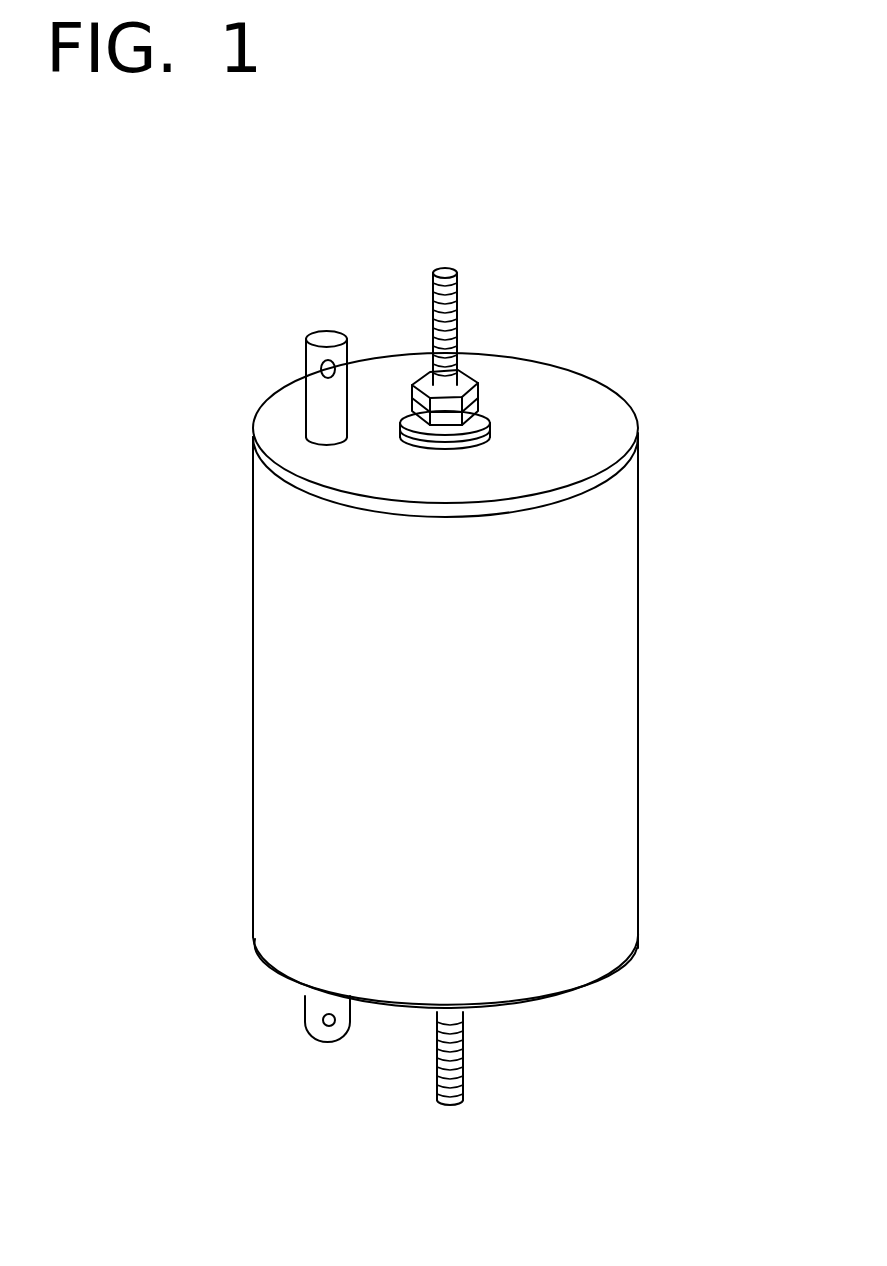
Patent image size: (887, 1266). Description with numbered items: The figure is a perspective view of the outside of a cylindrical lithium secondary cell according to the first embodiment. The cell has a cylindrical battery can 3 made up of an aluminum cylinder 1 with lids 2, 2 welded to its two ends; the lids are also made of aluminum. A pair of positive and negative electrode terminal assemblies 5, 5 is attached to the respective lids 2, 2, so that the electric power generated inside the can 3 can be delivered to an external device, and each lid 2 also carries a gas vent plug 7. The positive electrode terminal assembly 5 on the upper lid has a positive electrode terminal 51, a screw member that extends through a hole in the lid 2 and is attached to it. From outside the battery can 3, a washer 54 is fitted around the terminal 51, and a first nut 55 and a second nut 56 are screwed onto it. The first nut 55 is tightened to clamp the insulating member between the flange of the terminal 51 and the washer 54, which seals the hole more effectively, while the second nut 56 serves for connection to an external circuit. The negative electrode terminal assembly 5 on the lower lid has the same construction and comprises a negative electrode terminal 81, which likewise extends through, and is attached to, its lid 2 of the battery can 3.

The aluminum cylinder 1 is at (620, 655).
The lid 2 is at (618, 427).
The cylindrical battery can 3 is at (762, 597).
The electrode terminal assembly 5 is at (520, 266).
The gas vent plug 7 is at (308, 362).
The positive electrode terminal 51 is at (458, 297).
The washer 54 is at (403, 403).
The first nut 55 is at (488, 413).
The second nut 56 is at (475, 383).
The negative electrode terminal 81 is at (463, 1090).